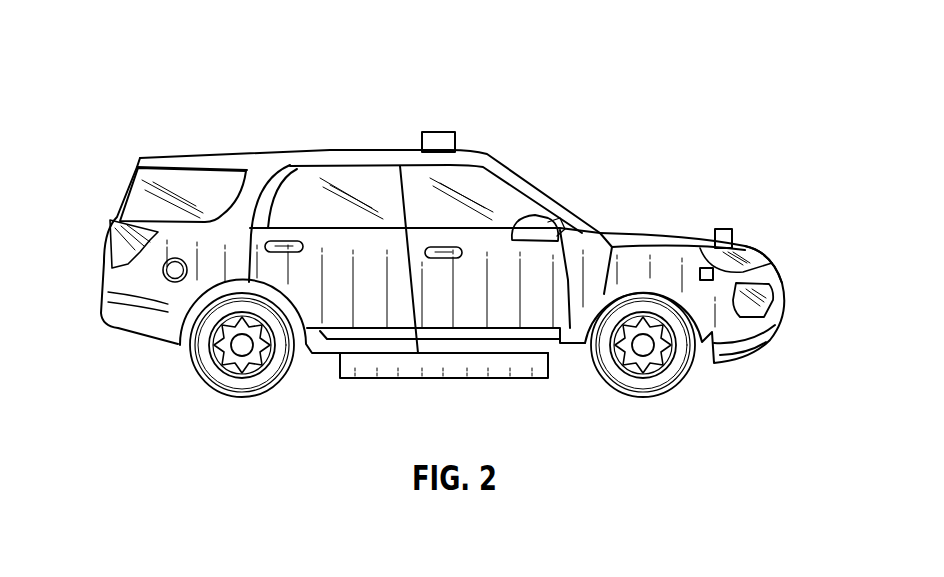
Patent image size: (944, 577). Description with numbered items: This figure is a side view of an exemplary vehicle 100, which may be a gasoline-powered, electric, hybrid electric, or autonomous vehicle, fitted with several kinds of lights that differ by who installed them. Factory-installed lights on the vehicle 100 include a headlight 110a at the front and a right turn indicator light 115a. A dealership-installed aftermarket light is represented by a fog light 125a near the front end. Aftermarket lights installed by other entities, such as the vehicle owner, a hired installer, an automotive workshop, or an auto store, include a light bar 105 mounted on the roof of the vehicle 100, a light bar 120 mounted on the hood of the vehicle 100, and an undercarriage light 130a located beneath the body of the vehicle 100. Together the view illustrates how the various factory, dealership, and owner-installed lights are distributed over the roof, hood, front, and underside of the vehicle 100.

The vehicle 100 is at (132, 72).
The light bar 105 is at (440, 132).
The headlight 110a is at (758, 258).
The right turn indicator light 115a is at (703, 268).
The light bar 120 is at (724, 229).
The fog light 125a is at (772, 295).
The undercarriage light 130a is at (444, 379).